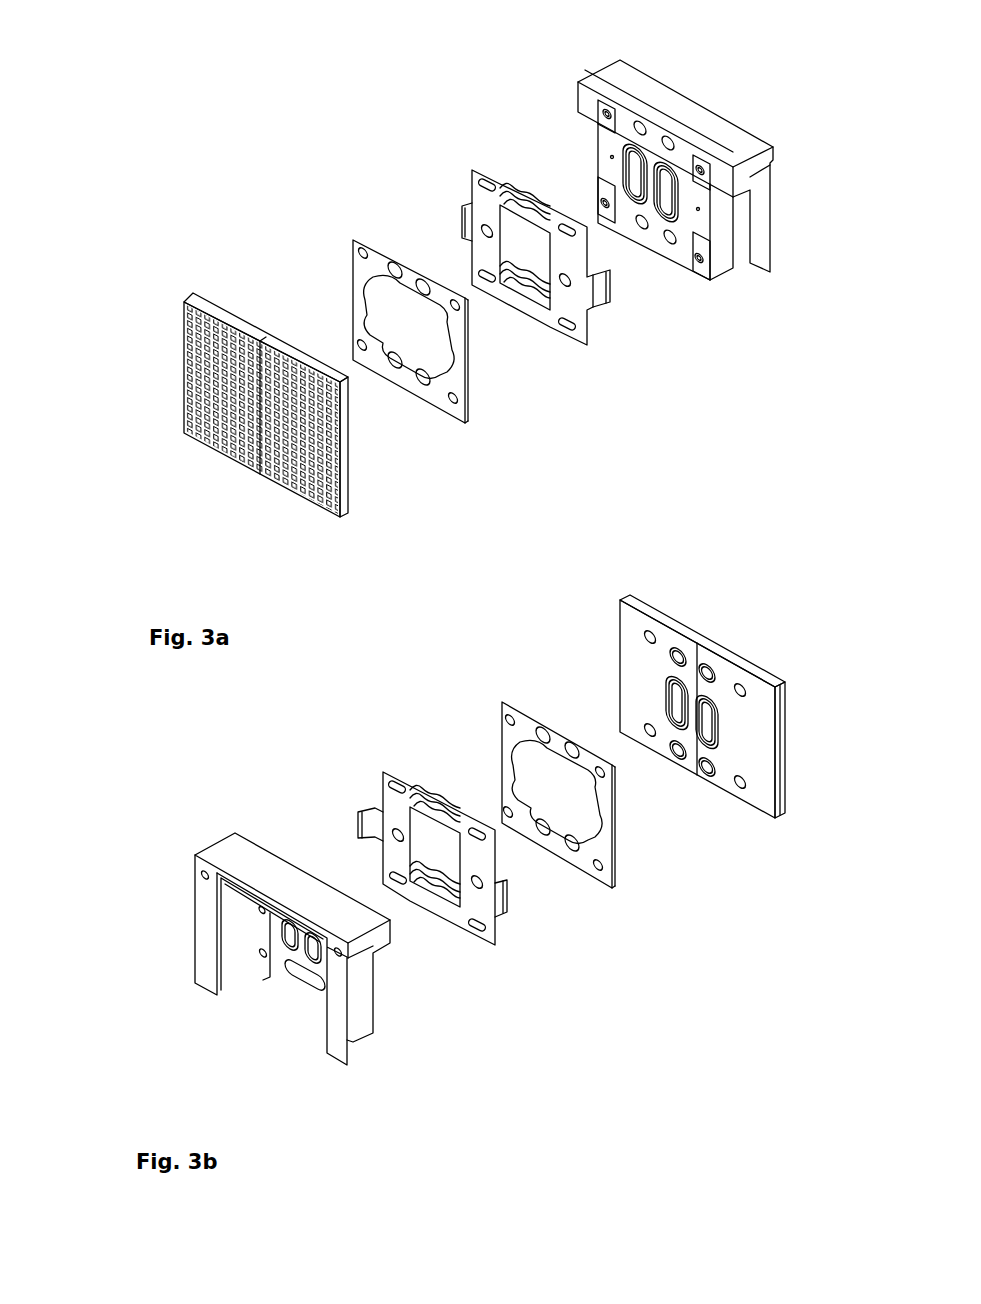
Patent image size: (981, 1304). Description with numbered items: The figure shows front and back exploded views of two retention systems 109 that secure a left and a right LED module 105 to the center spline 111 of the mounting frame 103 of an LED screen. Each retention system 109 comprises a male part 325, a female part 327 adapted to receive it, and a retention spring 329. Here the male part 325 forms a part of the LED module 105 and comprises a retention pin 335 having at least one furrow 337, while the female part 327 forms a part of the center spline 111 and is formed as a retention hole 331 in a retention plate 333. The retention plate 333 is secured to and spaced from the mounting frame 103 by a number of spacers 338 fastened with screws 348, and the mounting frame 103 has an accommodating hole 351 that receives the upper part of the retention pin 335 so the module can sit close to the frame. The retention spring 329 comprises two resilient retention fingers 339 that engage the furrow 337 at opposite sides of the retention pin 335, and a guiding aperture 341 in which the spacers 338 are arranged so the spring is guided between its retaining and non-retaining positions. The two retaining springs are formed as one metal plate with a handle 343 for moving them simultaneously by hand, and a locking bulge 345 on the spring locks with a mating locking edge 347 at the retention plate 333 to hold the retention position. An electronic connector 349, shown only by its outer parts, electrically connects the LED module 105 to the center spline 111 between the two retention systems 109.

In FIG. 3A, the mounting frame 103 is at (679, 146).
In FIG. 3B, the mounting frame 103 is at (250, 928).
In FIG. 3A, the LED module 105 is at (222, 452).
In FIG. 3A, the retention system 109 is at (296, 155).
In FIG. 3B, the retention system 109 is at (652, 980).
In FIG. 3A, the center spline 111 is at (690, 165).
In FIG. 3B, the center spline 111 is at (196, 930).
In FIG. 3A, the male part 325 is at (304, 328).
In FIG. 3B, the male part 325 is at (709, 657).
In FIG. 3A, the female part 327 is at (425, 255).
In FIG. 3B, the female part 327 is at (541, 705).
In FIG. 3A, the retention spring 329 is at (547, 195).
In FIG. 3B, the retention spring 329 is at (453, 784).
In FIG. 3A, the retention hole 331 is at (446, 274).
In FIG. 3B, the retention hole 331 is at (570, 737).
In FIG. 3A, the retention plate 333 is at (452, 330).
In FIG. 3B, the retention plate 333 is at (602, 800).
In FIG. 3B, the retention pin 335 is at (668, 685).
In FIG. 3B, the furrow 337 is at (678, 648).
In FIG. 3A, the spacer 338 is at (806, 170).
In FIG. 3A, the retention finger 339 is at (560, 305).
In FIG. 3B, the retention finger 339 is at (462, 915).
In FIG. 3A, the guiding aperture 341 is at (506, 214).
In FIG. 3B, the guiding aperture 341 is at (455, 808).
In FIG. 3A, the handle 343 is at (612, 302).
In FIG. 3B, the handle 343 is at (432, 862).
In FIG. 3A, the locking bulge 345 is at (397, 263).
In FIG. 3B, the locking bulge 345 is at (357, 812).
In FIG. 3A, the locking edge 347 is at (357, 296).
In FIG. 3B, the locking edge 347 is at (357, 826).
In FIG. 3A, the screw 348 is at (350, 250).
In FIG. 3B, the screw 348 is at (573, 716).
In FIG. 3A, the electronic connector 349 is at (672, 136).
In FIG. 3B, the electronic connector 349 is at (645, 640).
In FIG. 3A, the accommodating hole 351 is at (690, 125).